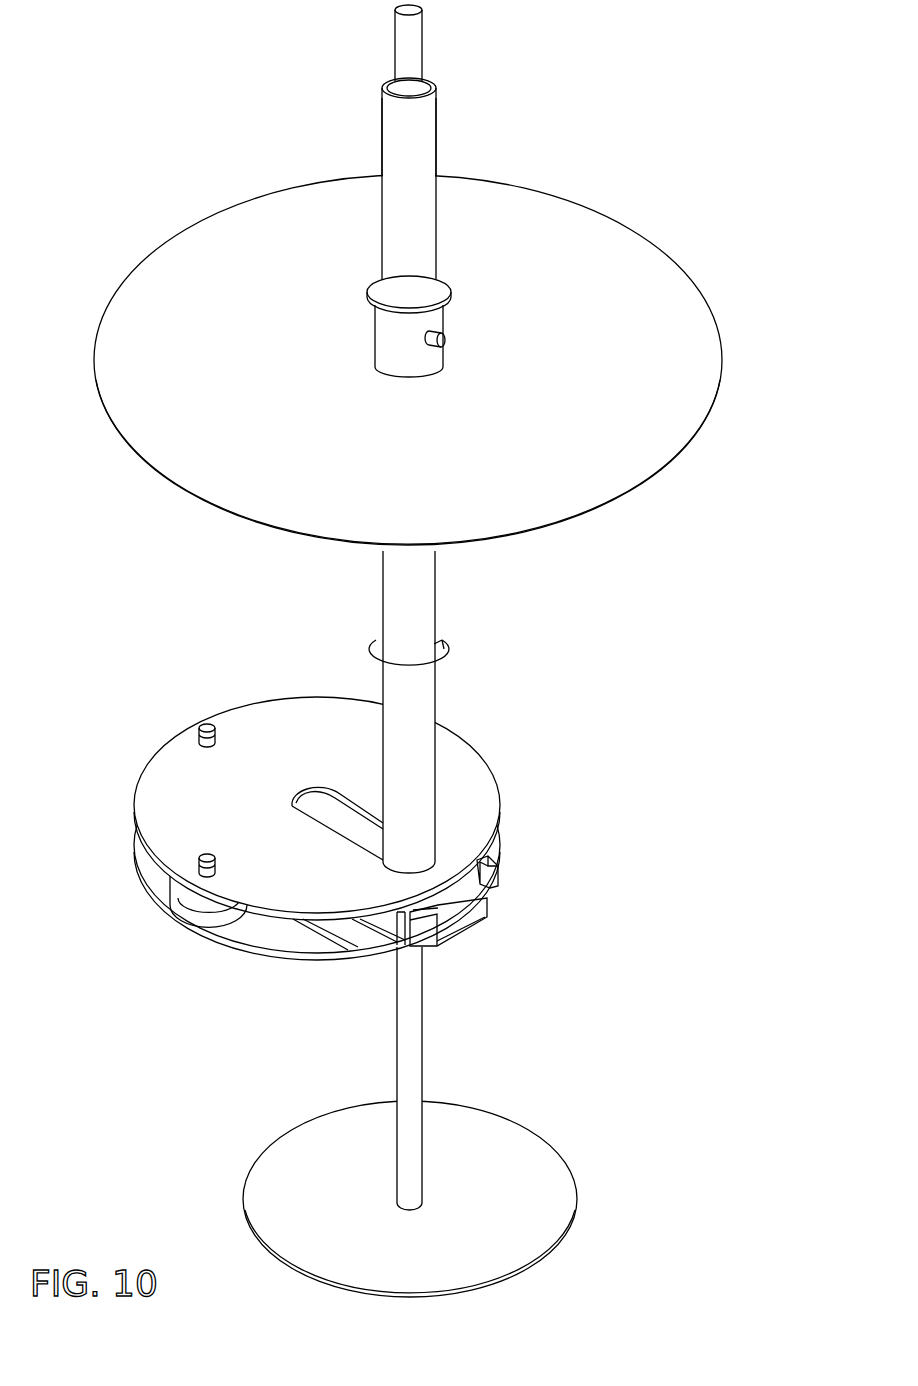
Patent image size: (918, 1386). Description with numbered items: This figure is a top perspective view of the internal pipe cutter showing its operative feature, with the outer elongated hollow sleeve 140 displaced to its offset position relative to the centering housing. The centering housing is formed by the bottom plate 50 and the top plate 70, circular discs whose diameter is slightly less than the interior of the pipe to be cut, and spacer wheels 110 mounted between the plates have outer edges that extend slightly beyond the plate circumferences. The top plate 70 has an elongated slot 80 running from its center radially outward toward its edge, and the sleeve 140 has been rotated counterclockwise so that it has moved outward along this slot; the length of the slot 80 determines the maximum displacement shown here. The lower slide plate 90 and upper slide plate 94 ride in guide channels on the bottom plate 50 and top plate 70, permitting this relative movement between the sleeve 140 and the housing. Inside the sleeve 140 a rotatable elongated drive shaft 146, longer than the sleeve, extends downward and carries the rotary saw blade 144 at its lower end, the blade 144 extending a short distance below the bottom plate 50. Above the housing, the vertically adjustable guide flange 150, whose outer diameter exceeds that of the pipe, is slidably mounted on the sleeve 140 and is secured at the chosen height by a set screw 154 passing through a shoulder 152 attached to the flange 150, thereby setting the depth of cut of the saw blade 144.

The bottom plate 50 is at (293, 937).
The top plate 70 is at (465, 784).
The elongated slot 80 is at (356, 823).
The lower slide plate 90 is at (481, 873).
The upper slide plate 94 is at (455, 918).
The spacer wheel 110 is at (218, 913).
The outer elongated hollow sleeve 140 is at (419, 583).
The rotary saw blade 144 is at (500, 1190).
The rotatable elongated drive shaft 146 is at (410, 1072).
The vertically adjustable guide flange 150 is at (667, 370).
The shoulder 152 is at (395, 331).
The set screw 154 is at (445, 340).